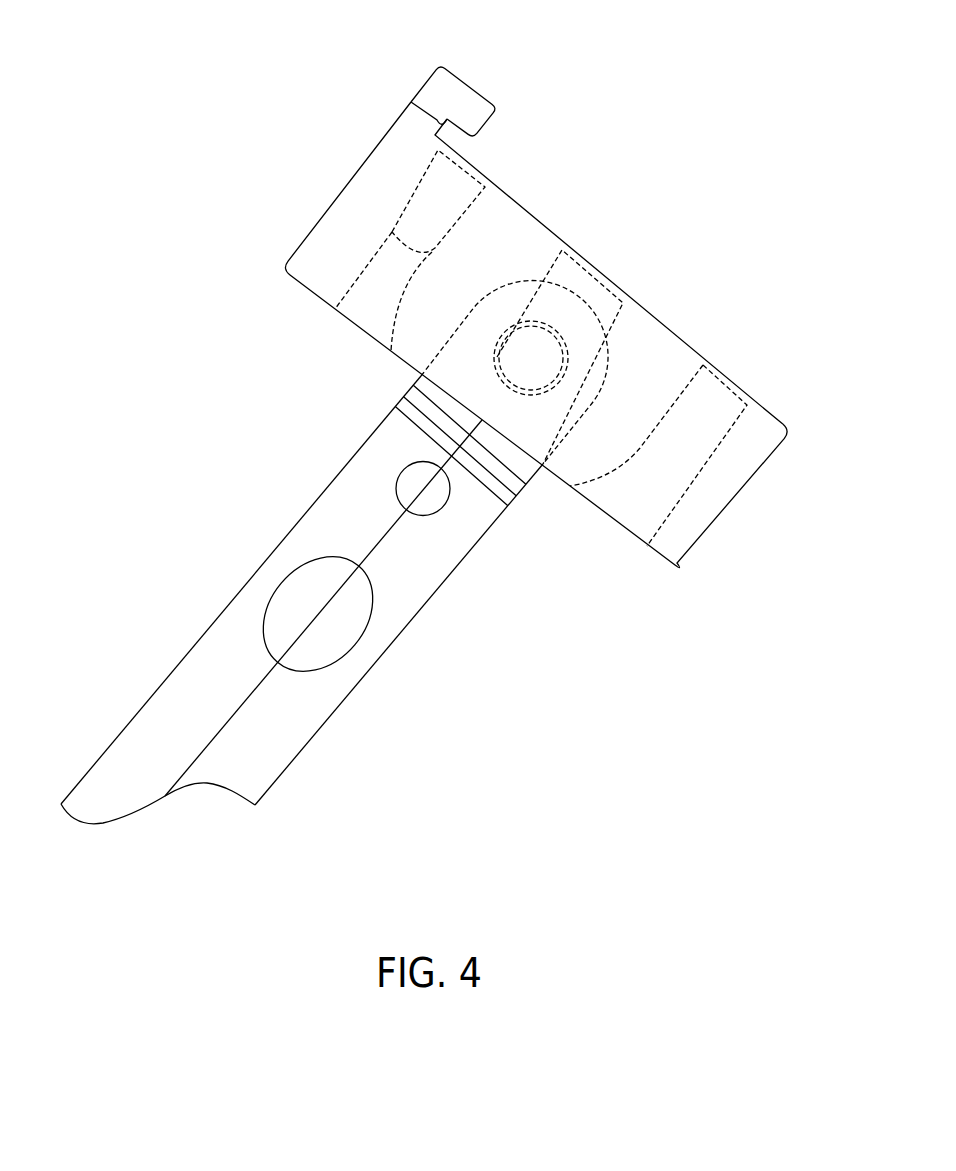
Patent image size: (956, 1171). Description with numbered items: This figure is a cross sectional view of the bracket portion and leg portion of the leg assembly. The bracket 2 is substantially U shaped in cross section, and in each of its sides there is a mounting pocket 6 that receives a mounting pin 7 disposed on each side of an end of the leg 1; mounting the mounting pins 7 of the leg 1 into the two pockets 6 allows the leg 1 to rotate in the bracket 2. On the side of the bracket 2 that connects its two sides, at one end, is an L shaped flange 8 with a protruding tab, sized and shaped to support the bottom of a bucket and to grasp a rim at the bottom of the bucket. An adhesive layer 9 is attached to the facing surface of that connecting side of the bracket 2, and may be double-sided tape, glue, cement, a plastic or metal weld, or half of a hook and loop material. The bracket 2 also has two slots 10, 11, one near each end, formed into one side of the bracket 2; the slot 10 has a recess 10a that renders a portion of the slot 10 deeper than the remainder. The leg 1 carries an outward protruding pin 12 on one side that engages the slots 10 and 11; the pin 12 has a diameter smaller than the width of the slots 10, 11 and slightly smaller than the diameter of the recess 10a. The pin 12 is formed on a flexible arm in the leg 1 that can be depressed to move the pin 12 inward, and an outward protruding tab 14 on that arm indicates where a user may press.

The leg 1 is at (253, 752).
The bracket 2 is at (392, 143).
The mounting pocket 6 is at (565, 307).
The mounting pin 7 is at (542, 365).
The L shaped flange 8 is at (472, 102).
The adhesive layer 9 is at (530, 203).
The slot 10 is at (370, 298).
The recess 10a is at (425, 210).
The slot 11 is at (692, 433).
The pin 12 is at (423, 482).
The tab 14 is at (318, 593).